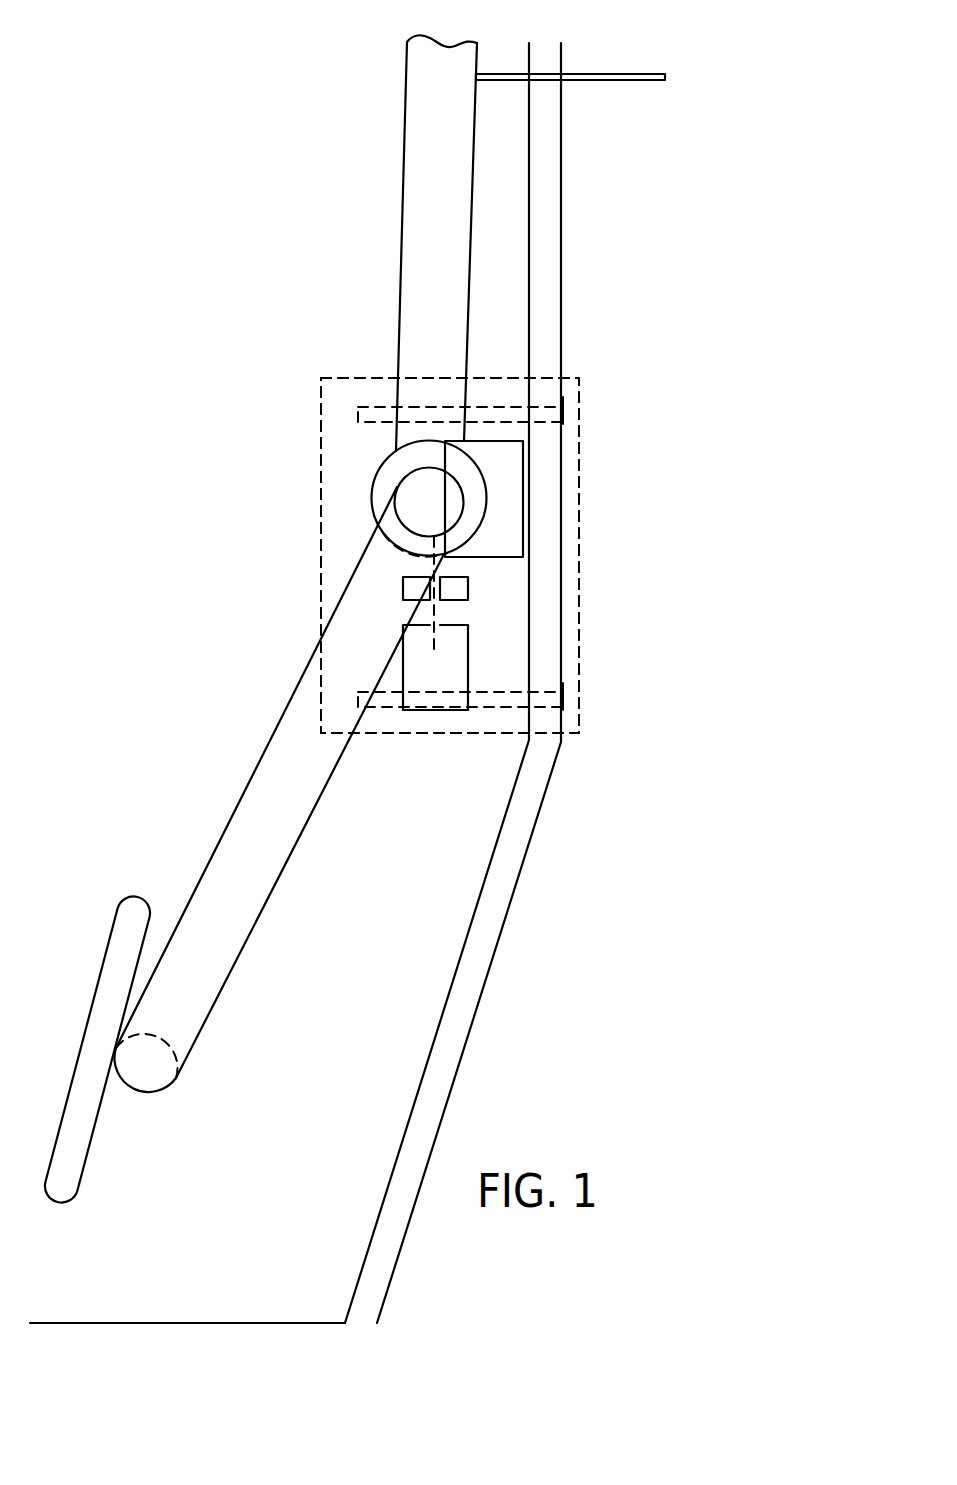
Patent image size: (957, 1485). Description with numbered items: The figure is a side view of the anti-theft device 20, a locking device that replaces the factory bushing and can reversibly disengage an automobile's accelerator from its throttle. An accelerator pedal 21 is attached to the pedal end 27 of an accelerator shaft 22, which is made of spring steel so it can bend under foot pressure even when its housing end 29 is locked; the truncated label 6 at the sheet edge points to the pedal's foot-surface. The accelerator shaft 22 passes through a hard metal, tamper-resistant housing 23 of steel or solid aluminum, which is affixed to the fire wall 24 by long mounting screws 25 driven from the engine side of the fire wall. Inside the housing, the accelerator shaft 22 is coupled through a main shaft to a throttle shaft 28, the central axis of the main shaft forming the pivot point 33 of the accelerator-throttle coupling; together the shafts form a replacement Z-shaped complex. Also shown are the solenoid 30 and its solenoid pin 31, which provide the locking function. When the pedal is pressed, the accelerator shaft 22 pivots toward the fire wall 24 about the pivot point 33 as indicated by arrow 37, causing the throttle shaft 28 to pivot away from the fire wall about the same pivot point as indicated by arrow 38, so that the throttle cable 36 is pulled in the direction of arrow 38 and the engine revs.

The strip feed direction 6 is at (50, 1054).
The anti-theft device 20 is at (210, 481).
The accelerator pedal 21 is at (100, 977).
The accelerator shaft 22 is at (240, 798).
The housing 23 is at (320, 547).
The fire wall 24 is at (562, 285).
The mounting screws 25 is at (563, 405).
The pedal end 27 is at (170, 1090).
The throttle shaft 28 is at (402, 240).
The housing end 29 is at (465, 497).
The solenoid 30 is at (400, 668).
The solenoid pin 31 is at (437, 612).
The pivot point 33 is at (429, 503).
The throttle cable 36 is at (590, 75).
The arrow 37 is at (290, 1087).
The arrow 38 is at (397, 82).